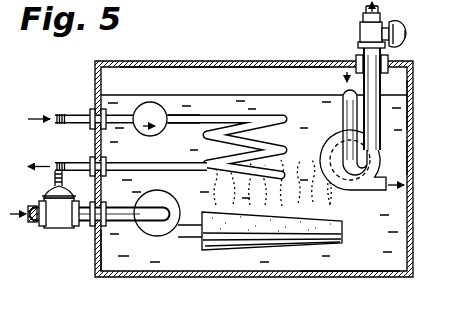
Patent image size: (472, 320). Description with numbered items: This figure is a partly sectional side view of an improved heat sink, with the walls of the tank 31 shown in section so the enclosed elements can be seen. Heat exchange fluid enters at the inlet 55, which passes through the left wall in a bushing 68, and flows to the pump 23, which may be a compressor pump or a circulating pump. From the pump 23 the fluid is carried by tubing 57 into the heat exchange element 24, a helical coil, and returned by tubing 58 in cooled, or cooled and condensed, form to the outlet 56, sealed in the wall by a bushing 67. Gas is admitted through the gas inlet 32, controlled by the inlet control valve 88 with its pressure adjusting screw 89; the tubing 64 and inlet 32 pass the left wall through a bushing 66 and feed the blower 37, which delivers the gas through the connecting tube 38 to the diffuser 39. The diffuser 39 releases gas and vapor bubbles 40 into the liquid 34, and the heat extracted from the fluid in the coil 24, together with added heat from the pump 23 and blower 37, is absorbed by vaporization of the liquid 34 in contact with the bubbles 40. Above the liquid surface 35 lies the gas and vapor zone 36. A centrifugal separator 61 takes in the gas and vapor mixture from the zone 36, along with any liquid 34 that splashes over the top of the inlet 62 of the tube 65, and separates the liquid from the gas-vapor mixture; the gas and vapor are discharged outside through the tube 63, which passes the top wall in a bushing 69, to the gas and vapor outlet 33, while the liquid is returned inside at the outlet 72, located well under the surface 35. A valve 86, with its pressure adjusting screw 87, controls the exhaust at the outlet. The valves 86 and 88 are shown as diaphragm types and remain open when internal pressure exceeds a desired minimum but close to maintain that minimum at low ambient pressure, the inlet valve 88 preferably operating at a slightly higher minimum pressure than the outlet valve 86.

The pump 23 is at (158, 101).
The gas and vapor zone 36 is at (223, 68).
The heat exchange element 24 is at (253, 117).
The gas and vapor outlet 33 is at (363, 14).
The valve 86 is at (400, 22).
The pressure adjusting screw 87 is at (409, 33).
The bushing 69 is at (358, 63).
The tube 63 is at (382, 88).
The surface 35 is at (410, 93).
The inlet 62 is at (345, 94).
The tube 65 is at (340, 122).
The gas and vapor bubbles 40 is at (410, 150).
The centrifugal separator 61 is at (412, 187).
The outlet 72 is at (398, 203).
The tank 31 is at (411, 238).
The liquid 34 is at (396, 257).
The inlet 55 is at (60, 116).
The bushing 68 is at (93, 108).
The outlet 56 is at (60, 163).
The bushing 67 is at (93, 164).
The tubing 58 is at (145, 163).
The tubing 57 is at (175, 124).
The pressure adjusting screw 89 is at (54, 172).
The inlet control valve 88 is at (44, 196).
The gas inlet 32 is at (34, 223).
The bushing 66 is at (95, 227).
The tubing 64 is at (100, 248).
The blower 37 is at (152, 238).
The connecting tube 38 is at (183, 242).
The diffuser 39 is at (254, 250).